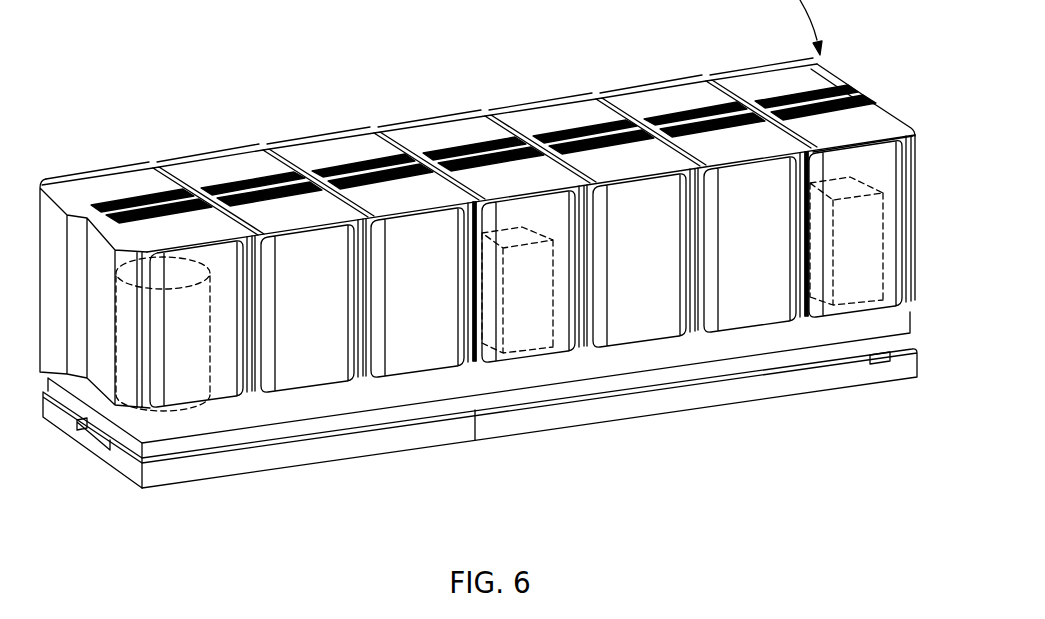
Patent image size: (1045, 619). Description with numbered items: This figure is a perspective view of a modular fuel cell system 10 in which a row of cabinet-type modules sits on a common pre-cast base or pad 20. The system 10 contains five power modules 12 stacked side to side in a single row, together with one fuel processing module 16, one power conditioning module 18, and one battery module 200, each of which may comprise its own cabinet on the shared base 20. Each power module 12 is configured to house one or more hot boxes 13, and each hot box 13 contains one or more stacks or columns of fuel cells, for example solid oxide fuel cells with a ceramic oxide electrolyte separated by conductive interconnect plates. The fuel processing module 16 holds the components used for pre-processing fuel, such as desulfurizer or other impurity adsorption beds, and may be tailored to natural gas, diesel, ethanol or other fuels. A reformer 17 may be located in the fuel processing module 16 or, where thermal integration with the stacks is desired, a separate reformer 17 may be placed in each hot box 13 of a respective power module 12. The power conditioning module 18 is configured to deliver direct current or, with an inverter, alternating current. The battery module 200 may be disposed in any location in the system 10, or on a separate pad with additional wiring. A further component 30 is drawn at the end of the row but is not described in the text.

The modular fuel cell system 10 is at (311, 78).
The power module 12 is at (122, 177).
The hot box 13 is at (112, 362).
The fuel processing module 16 is at (870, 127).
The reformer 17 is at (795, 232).
The power conditioning module 18 is at (768, 83).
The base 20 is at (192, 478).
The end module front face 30 is at (890, 172).
The battery module 200 is at (530, 353).